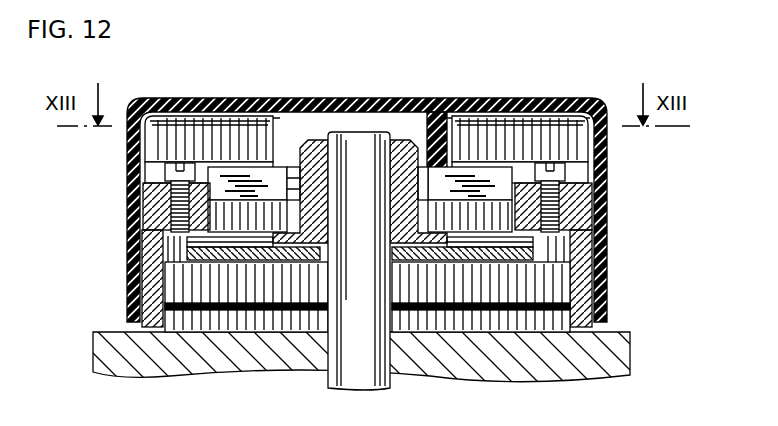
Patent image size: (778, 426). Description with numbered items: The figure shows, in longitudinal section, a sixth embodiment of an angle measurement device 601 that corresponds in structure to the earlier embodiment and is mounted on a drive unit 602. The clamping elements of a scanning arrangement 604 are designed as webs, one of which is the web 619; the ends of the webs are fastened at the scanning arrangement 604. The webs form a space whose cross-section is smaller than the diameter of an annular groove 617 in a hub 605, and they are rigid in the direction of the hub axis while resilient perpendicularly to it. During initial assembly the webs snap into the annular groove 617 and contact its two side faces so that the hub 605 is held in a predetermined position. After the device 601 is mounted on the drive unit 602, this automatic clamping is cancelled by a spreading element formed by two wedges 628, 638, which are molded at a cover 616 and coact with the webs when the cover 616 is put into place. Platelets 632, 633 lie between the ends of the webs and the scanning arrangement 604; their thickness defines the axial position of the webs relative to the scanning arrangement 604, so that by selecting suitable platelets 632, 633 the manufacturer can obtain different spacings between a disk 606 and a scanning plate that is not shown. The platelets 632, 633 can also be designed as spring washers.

The angle measurement device 601 is at (503, 95).
The drive unit 602 is at (610, 331).
The scanning arrangement 604 is at (590, 243).
The hub 605 is at (318, 150).
The disk 606 is at (196, 258).
The cover 616 is at (606, 268).
The annular groove 617 is at (412, 166).
The web 619 is at (222, 163).
The wedge 628 is at (291, 160).
The platelet 632 is at (147, 212).
The platelet 633 is at (607, 204).
The wedge 638 is at (437, 130).